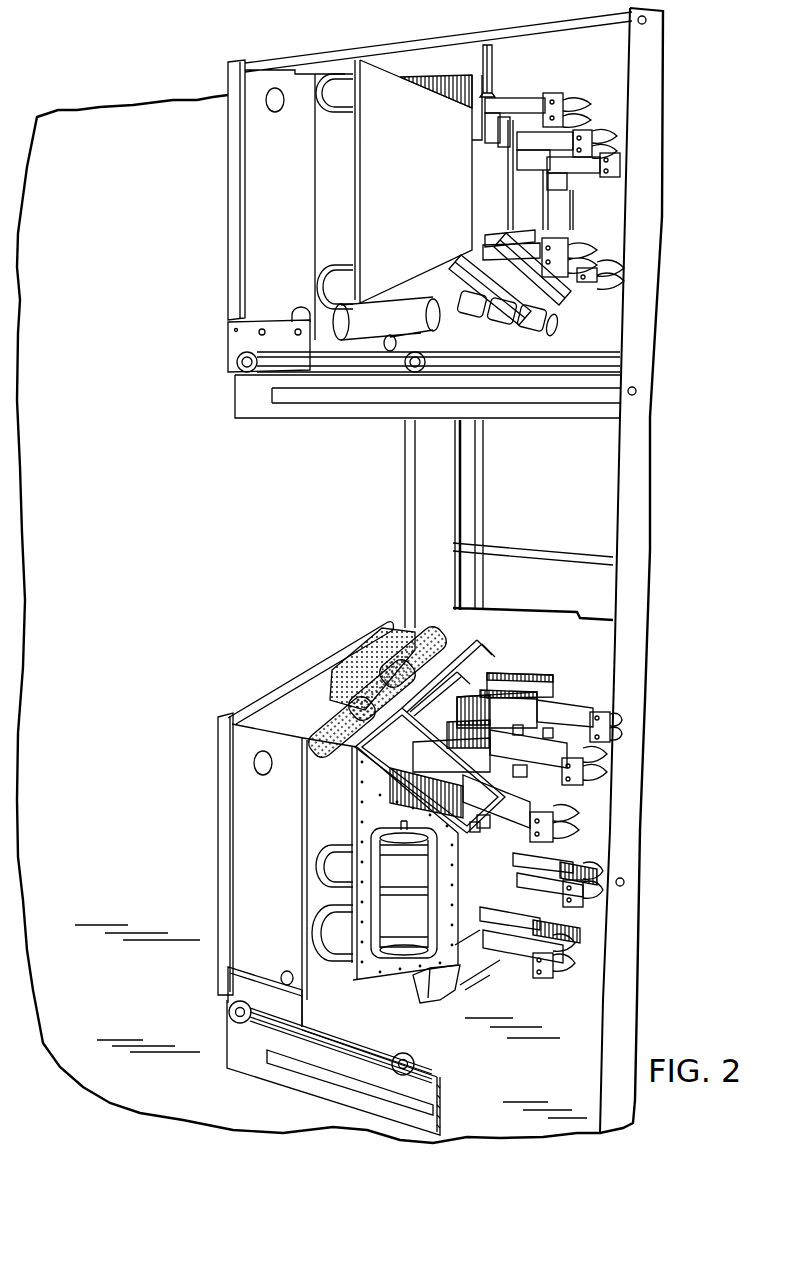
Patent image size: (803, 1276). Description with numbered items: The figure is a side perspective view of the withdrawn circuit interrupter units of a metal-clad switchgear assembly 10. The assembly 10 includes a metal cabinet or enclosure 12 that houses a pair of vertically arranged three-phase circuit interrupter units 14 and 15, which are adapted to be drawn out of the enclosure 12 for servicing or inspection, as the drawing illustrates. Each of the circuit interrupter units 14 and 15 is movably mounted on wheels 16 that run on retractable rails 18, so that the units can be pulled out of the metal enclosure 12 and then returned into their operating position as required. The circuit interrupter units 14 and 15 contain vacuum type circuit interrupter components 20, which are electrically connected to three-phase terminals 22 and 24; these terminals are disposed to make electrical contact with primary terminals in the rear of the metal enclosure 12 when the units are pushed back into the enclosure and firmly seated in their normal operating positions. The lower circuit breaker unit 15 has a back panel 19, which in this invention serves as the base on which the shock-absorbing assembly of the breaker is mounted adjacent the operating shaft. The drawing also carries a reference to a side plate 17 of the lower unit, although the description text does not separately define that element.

The metal-clad switchgear assembly 10 is at (216, 568).
The metal cabinet or enclosure 12 is at (640, 350).
The circuit interrupter unit 14 is at (257, 190).
The circuit interrupter unit 15 is at (218, 800).
The wheels 16 is at (240, 365).
The side plate 17 is at (218, 880).
The retractable rails 18 is at (283, 410).
The back panel 19 is at (337, 958).
The vacuum type circuit interrupter components 20 is at (415, 877).
The three-phase terminals 22 is at (575, 252).
The three-phase terminals 24 is at (605, 130).